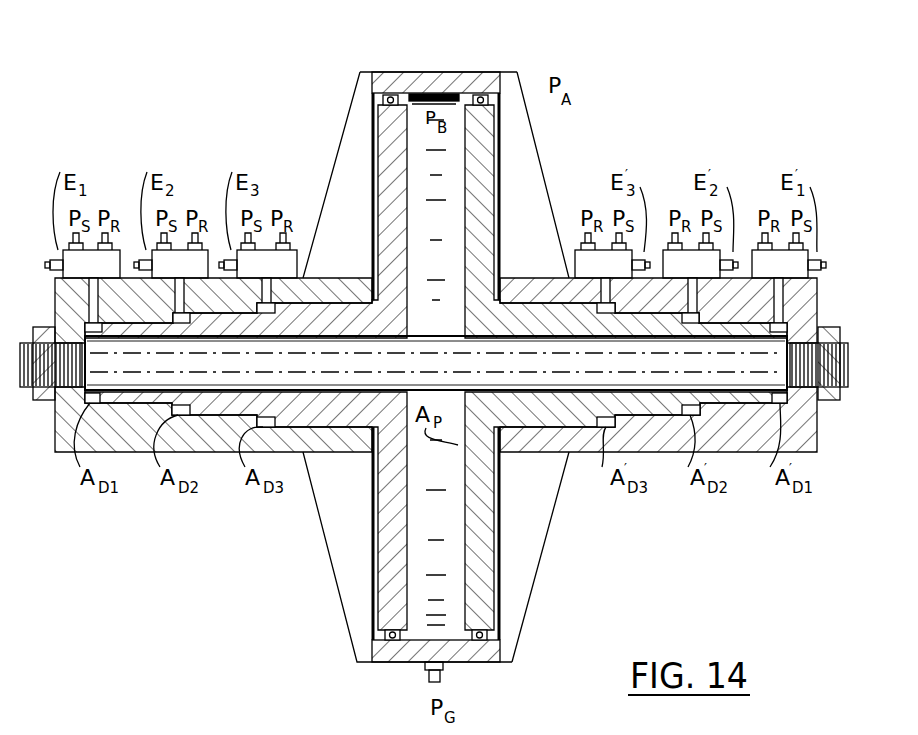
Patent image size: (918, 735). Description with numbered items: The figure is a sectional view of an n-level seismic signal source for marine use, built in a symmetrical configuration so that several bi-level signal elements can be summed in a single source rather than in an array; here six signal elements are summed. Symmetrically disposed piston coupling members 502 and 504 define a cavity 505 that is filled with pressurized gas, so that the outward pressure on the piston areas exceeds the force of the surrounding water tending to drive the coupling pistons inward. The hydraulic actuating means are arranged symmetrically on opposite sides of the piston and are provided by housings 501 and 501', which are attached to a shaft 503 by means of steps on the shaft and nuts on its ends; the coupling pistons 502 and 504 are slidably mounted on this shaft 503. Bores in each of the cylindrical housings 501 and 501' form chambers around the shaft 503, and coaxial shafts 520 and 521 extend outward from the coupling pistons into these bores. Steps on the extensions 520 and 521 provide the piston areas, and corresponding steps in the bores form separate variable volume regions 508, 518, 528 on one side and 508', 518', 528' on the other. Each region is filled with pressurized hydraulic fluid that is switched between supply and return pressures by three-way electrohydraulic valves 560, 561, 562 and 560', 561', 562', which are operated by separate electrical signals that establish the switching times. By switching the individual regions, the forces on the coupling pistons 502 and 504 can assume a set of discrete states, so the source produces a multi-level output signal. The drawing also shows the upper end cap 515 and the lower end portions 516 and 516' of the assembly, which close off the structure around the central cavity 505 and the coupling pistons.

The housing 501 is at (186, 365).
The housing 501' is at (693, 376).
The piston coupling member 502 is at (407, 170).
The shaft 503 is at (250, 376).
The piston coupling member 504 is at (464, 246).
The cavity 505 is at (418, 634).
The variable volume region 508 is at (75, 462).
The variable volume region 518 is at (162, 468).
The variable volume region 528 is at (247, 474).
The variable volume region 508' is at (820, 462).
The variable volume region 518' is at (730, 468).
The variable volume region 528' is at (644, 474).
The upper end cap 515 is at (436, 72).
The lower end cone 516 is at (391, 557).
The lower end cone 516' is at (565, 557).
The coaxial shaft 520 is at (326, 306).
The coaxial shaft 521 is at (532, 306).
The three-way electrohydraulic valve 560 is at (82, 206).
The three-way electrohydraulic valve 561 is at (172, 206).
The three-way electrohydraulic valve 562 is at (258, 206).
The three-way electrohydraulic valve 560' is at (787, 203).
The three-way electrohydraulic valve 561' is at (699, 203).
The three-way electrohydraulic valve 562' is at (609, 202).